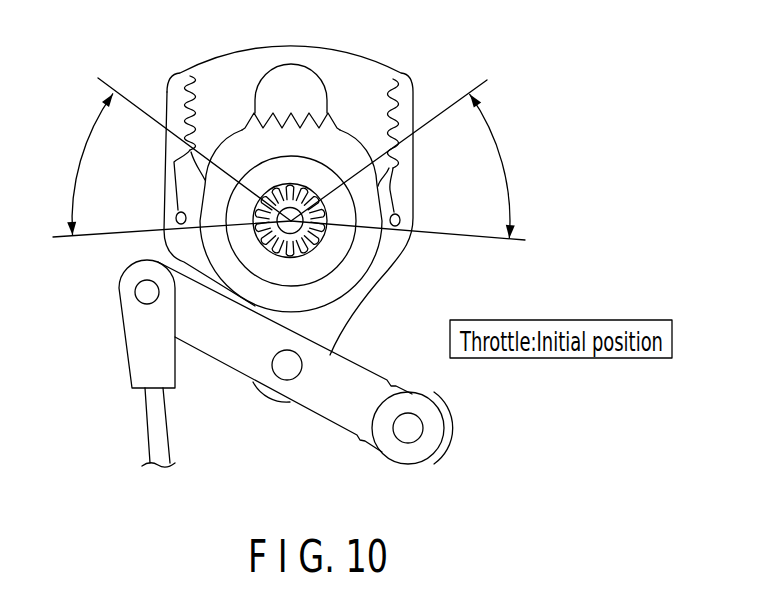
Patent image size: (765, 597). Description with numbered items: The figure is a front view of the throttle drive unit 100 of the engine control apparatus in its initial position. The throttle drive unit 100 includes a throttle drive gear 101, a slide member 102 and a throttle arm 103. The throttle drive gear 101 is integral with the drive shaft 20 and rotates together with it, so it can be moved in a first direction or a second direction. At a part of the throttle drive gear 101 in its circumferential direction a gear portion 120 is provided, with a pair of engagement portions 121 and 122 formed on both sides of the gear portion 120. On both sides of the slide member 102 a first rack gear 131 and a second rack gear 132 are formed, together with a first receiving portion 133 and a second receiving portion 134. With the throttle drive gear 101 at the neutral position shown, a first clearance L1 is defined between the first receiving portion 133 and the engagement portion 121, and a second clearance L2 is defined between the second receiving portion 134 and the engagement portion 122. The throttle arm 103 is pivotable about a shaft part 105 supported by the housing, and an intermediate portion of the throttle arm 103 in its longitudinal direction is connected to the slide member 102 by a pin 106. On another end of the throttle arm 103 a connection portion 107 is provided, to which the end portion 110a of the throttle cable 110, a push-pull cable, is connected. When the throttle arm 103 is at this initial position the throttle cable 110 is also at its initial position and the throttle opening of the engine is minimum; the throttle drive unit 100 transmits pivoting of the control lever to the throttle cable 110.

The throttle drive unit 100 is at (477, 61).
The throttle drive gear 101 is at (345, 281).
The slide member 102 is at (345, 62).
The throttle arm 103 is at (313, 402).
The shaft part 105 is at (410, 428).
The pin 106 is at (290, 365).
The connection portion 107 is at (145, 292).
The throttle cable 110 is at (155, 422).
The end portion of the throttle cable 110a is at (133, 280).
The gear portion 120 is at (291, 112).
The engagement portion 121 is at (386, 170).
The engagement portion 122 is at (180, 160).
The first rack gear 131 is at (381, 94).
The second rack gear 132 is at (206, 100).
The first receiving portion 133 is at (400, 218).
The second receiving portion 134 is at (177, 215).
The drive shaft 20 is at (300, 196).
The first clearance L1 is at (508, 173).
The second clearance L2 is at (70, 170).